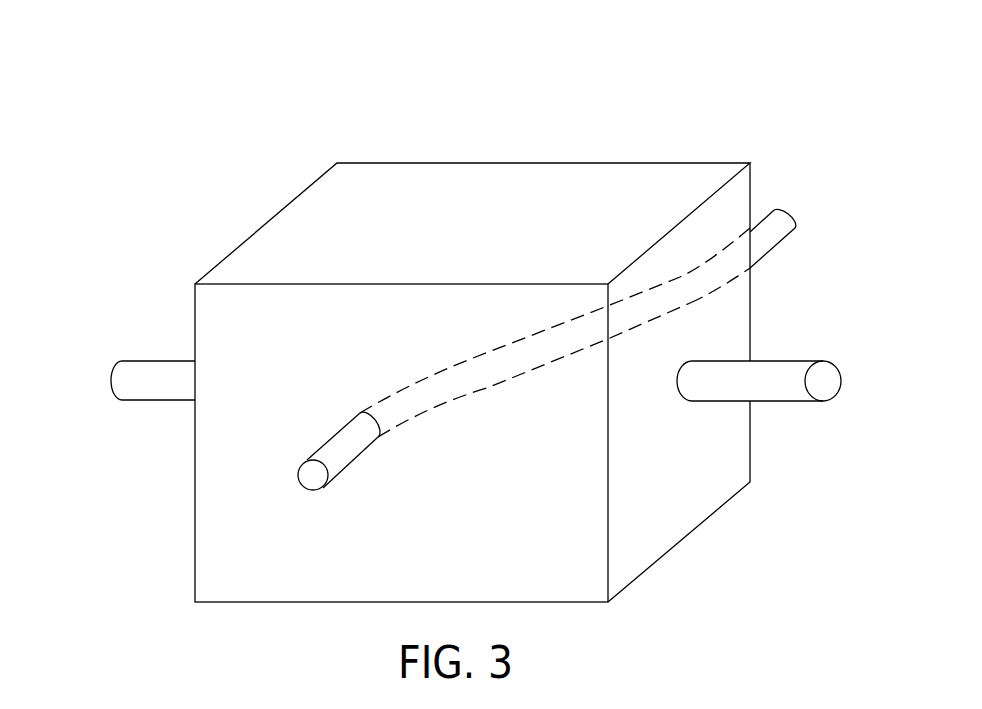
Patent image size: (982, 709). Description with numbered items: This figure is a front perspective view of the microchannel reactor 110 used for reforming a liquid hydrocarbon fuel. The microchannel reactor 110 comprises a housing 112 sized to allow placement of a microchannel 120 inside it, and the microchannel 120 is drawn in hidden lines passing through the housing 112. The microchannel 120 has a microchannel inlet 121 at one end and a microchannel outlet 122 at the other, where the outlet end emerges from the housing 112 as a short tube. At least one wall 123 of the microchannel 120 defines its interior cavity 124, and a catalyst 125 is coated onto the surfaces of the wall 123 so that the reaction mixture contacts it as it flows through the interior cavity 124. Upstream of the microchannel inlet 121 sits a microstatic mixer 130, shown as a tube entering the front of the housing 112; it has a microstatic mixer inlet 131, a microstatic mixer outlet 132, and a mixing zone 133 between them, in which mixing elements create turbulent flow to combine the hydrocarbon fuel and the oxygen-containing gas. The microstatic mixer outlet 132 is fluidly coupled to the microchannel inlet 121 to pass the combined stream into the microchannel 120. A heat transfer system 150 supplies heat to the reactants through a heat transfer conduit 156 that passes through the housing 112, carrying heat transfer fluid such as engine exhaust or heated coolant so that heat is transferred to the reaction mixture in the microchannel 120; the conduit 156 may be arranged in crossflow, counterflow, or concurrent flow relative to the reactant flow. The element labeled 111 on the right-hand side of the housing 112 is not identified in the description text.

The microchannel reactor 110 is at (243, 147).
The outlet conduit 111 is at (830, 361).
The housing 112 is at (543, 163).
The microchannel 120 is at (473, 358).
The microchannel inlet 121 is at (372, 406).
The microchannel outlet 122 is at (787, 211).
The wall 123 is at (487, 388).
The interior cavity 124 is at (545, 355).
The catalyst 125 is at (705, 300).
The microstatic mixer 130 is at (325, 469).
The microstatic mixer inlet 131 is at (315, 492).
The microstatic mixer outlet 132 is at (362, 415).
The mixing zone 133 is at (330, 450).
The heat transfer system 150 is at (120, 401).
The heat transfer conduit 156 is at (145, 361).